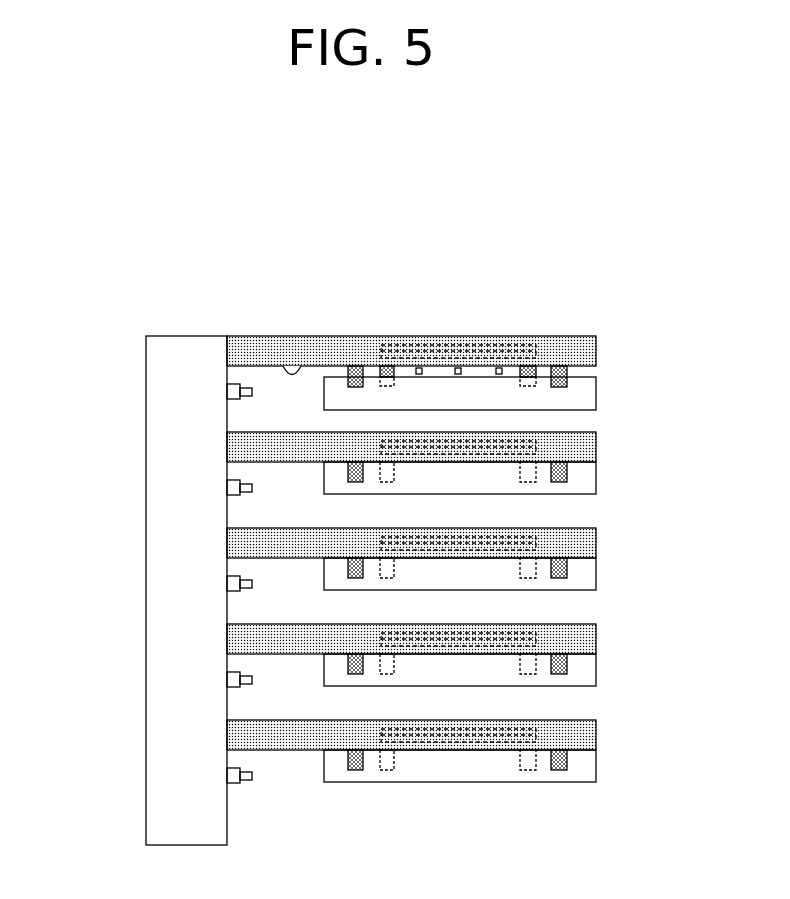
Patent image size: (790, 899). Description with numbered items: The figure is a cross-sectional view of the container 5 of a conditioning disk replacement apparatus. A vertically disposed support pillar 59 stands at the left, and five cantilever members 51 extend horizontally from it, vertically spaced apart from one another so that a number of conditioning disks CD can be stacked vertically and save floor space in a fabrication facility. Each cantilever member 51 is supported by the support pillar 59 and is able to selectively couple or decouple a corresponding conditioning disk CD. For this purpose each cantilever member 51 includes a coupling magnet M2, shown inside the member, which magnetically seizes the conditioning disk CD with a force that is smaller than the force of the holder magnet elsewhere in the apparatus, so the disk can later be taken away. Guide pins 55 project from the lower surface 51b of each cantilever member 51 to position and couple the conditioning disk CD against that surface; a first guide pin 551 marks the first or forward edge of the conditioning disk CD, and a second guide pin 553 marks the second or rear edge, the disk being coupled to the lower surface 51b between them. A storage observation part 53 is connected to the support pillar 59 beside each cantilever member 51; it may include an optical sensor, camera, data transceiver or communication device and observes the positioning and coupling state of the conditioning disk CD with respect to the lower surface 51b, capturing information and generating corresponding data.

The container 5 is at (592, 195).
The support pillar 59 is at (158, 589).
The cantilever member 51 is at (353, 348).
The lower surface 51b is at (300, 357).
The storage observation part 53 is at (232, 384).
The conditioning disk CD is at (597, 390).
The coupling magnet M2 is at (446, 352).
The guide pin 55 is at (600, 268).
The second guide pin 553 is at (547, 372).
The first guide pin 551 is at (580, 372).